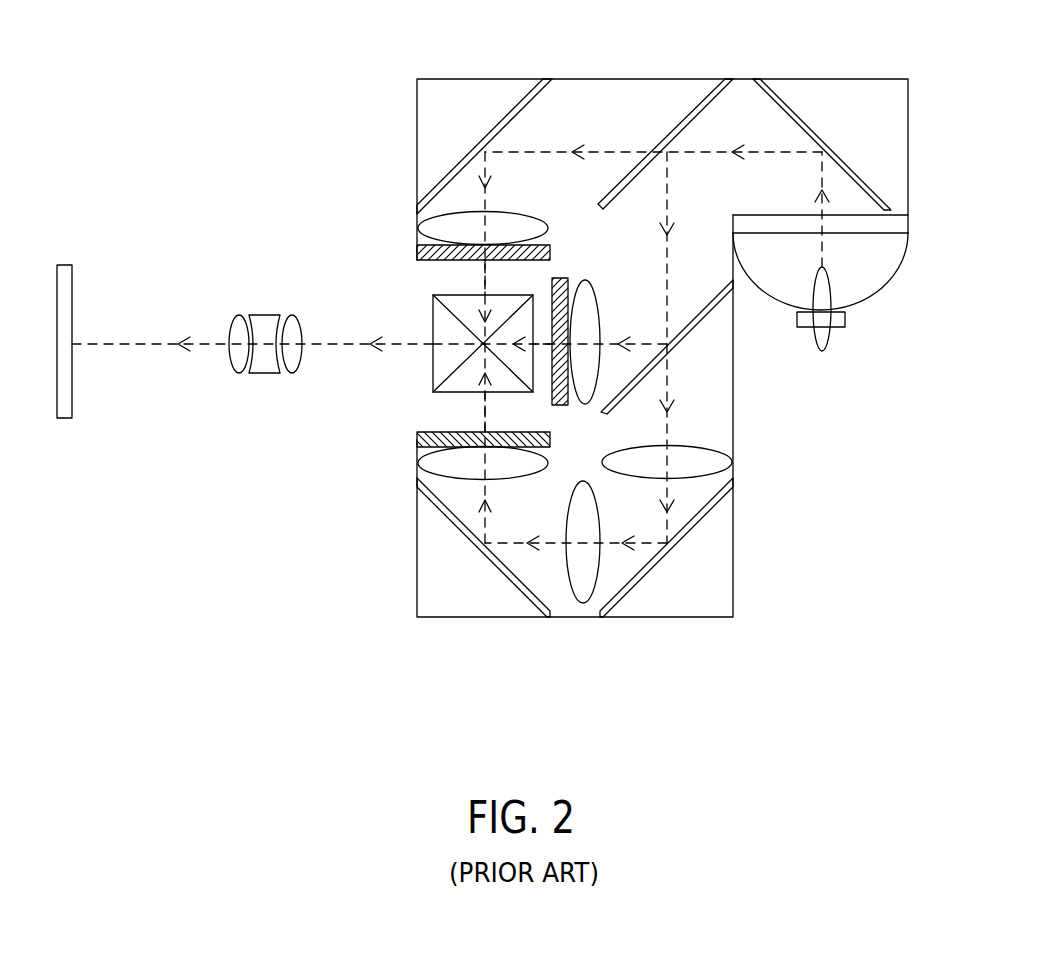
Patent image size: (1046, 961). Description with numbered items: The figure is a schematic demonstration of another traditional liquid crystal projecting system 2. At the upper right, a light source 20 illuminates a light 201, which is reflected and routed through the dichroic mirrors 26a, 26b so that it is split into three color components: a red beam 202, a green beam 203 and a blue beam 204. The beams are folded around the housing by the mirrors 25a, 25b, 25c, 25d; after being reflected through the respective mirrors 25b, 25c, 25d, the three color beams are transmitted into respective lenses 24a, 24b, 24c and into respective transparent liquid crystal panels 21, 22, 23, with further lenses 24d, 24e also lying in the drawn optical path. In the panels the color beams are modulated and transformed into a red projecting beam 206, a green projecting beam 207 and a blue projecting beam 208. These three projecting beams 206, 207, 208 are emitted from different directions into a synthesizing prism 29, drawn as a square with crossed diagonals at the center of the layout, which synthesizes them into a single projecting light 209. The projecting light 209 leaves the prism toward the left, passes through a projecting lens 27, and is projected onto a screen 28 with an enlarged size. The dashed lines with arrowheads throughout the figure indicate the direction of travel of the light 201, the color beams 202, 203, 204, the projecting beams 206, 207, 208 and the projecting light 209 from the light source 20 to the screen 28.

The liquid crystal projecting system 2 is at (328, 132).
The light source 20 is at (824, 332).
The light 201 is at (822, 253).
The red beam 202 is at (617, 153).
The green beam 203 is at (668, 395).
The blue beam 204 is at (619, 344).
The red projecting beam 206 is at (483, 272).
The green projecting beam 207 is at (552, 343).
The blue projecting beam 208 is at (483, 415).
The projecting light 209 is at (347, 350).
The transparent liquid crystal panel 21 is at (427, 252).
The transparent liquid crystal panel 22 is at (562, 277).
The transparent liquid crystal panel 23 is at (420, 450).
The lens 24a is at (452, 228).
The lens 24b is at (580, 300).
The lens 24c is at (462, 465).
The lens 24d is at (695, 465).
The lens 24e is at (583, 590).
The mirror 25a is at (790, 110).
The mirror 25b is at (513, 110).
The mirror 25c is at (698, 525).
The mirror 25d is at (510, 578).
The dichroic mirror 26a is at (700, 108).
The dichroic mirror 26b is at (700, 322).
The projecting lens 27 is at (262, 325).
The screen 28 is at (72, 282).
The synthesizing prism 29 is at (448, 360).